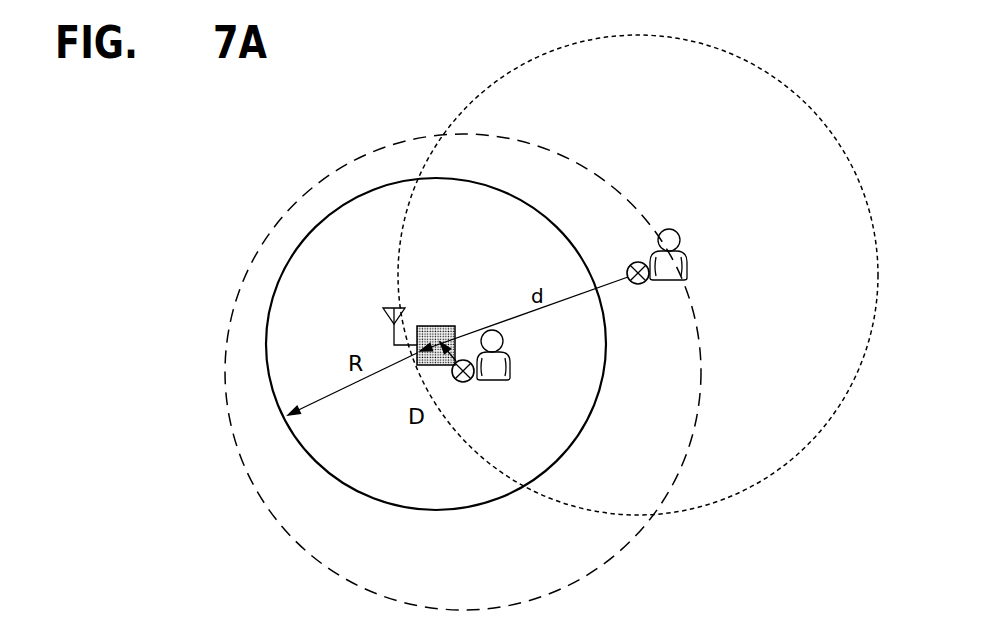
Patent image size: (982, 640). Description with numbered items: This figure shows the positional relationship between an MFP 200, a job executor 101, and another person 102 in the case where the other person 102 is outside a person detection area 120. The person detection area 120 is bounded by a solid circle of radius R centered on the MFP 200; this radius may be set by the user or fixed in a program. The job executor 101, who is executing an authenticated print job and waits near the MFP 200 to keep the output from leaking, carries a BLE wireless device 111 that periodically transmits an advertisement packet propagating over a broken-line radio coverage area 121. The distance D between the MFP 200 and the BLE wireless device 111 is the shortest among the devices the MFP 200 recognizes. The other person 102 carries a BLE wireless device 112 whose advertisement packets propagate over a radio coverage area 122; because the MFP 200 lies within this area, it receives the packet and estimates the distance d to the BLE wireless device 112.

The person detection area 120 is at (338, 208).
The radio coverage area 121 is at (243, 463).
The radio coverage area 122 is at (485, 88).
The MFP 200 is at (456, 331).
The job executor 101 is at (510, 357).
The other person 102 is at (688, 258).
The BLE wireless device 111 is at (467, 383).
The BLE wireless device 112 is at (638, 262).